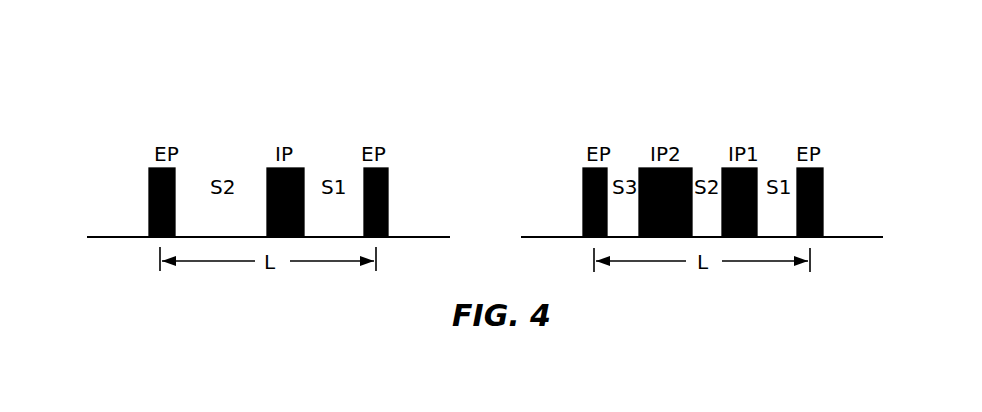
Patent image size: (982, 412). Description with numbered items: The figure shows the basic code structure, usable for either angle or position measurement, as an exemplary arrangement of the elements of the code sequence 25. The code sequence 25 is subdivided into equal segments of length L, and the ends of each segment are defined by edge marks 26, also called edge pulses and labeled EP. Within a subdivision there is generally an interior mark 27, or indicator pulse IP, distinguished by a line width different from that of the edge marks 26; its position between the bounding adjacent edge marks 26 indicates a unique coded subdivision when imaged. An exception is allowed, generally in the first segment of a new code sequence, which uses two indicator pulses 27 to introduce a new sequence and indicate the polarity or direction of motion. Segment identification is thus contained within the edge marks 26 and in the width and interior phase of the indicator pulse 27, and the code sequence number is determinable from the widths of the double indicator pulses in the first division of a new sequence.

The code sequence 25 is at (552, 187).
The edge marks 26 is at (150, 172).
The interior mark 27 is at (268, 172).